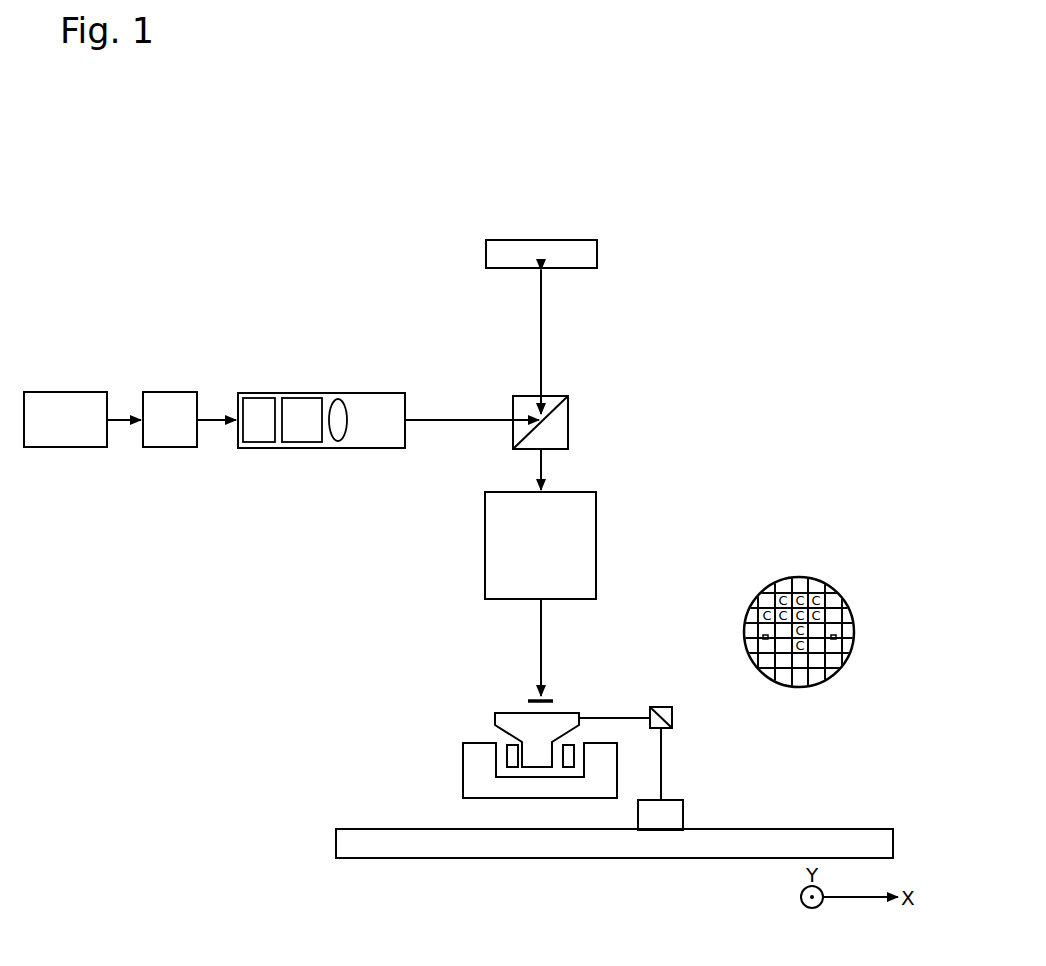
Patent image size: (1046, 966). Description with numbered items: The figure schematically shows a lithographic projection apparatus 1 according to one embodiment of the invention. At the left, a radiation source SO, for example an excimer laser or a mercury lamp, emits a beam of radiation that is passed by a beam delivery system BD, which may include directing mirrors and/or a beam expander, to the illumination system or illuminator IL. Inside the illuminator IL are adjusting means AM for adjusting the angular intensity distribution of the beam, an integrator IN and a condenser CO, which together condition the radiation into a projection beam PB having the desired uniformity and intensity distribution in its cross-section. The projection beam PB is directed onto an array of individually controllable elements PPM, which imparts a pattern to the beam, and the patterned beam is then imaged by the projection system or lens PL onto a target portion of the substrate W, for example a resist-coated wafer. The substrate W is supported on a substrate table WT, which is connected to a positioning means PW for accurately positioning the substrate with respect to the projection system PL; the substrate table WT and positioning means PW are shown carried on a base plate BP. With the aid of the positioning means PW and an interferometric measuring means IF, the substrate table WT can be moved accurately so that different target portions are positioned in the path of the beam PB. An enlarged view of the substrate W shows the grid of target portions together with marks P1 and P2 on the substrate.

The lithographic apparatus 1 is at (236, 244).
The radiation source SO is at (65, 419).
The beam delivery system BD is at (170, 419).
The illumination system (illuminator) IL is at (302, 398).
The adjusting means AM is at (260, 398).
The integrator IN is at (305, 398).
The condenser CO is at (347, 413).
The projection beam PB is at (497, 420).
The array of individually controllable elements PPM is at (541, 254).
The projection system (lens) PL is at (540, 545).
The substrate W is at (710, 623).
The substrate table WT is at (538, 767).
The positioning means PW is at (573, 798).
The interferometric measuring means IF is at (672, 718).
The base plate BP is at (614, 843).
The alignment mark P1 is at (765, 640).
The alignment mark P2 is at (834, 640).